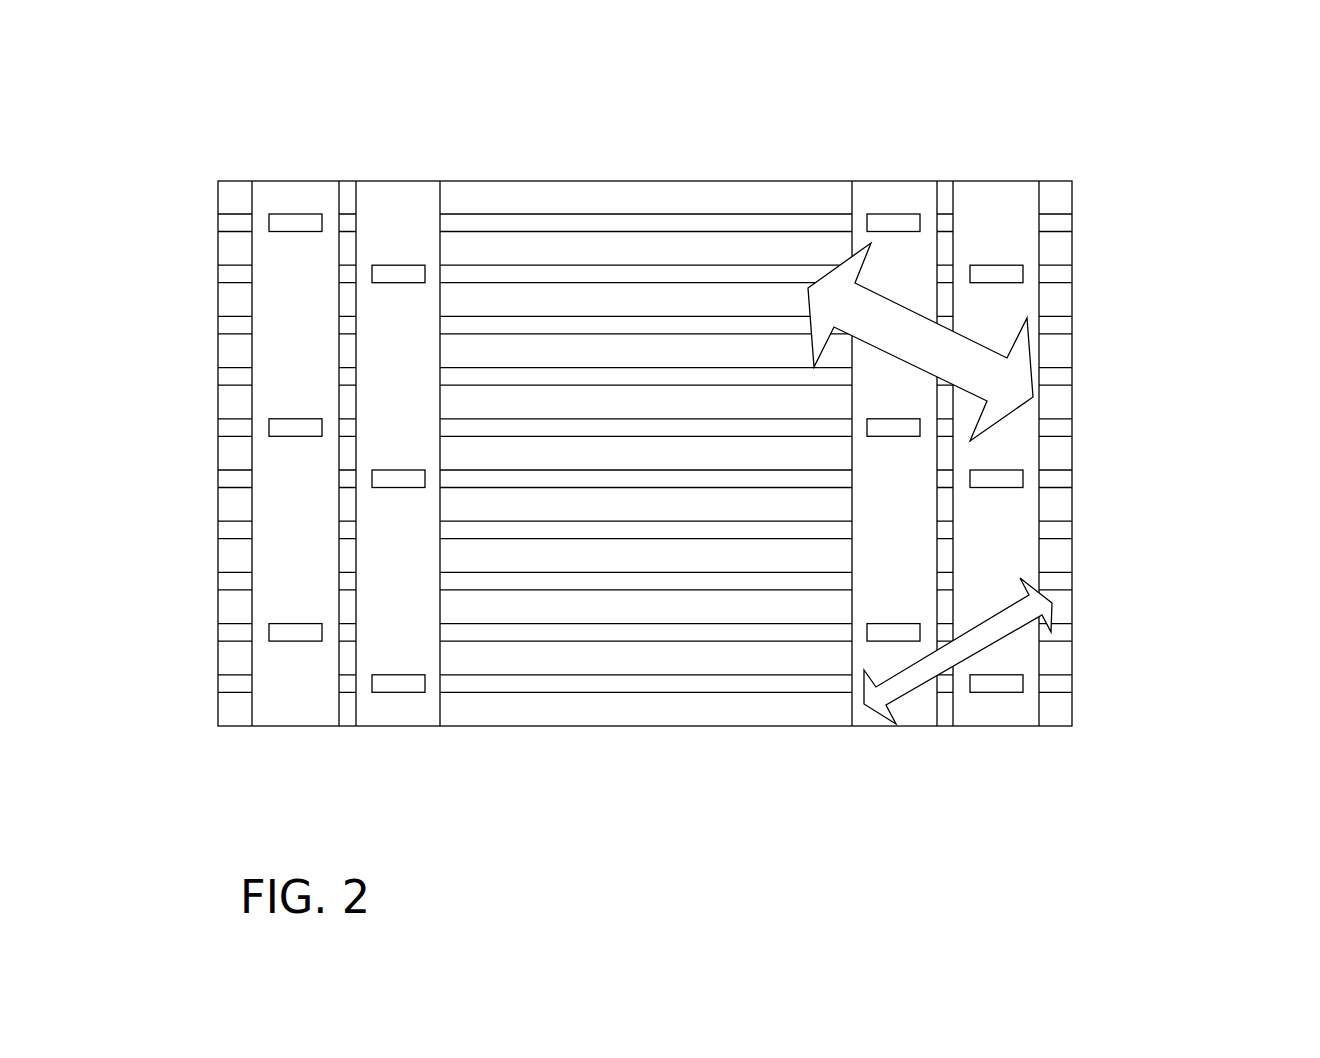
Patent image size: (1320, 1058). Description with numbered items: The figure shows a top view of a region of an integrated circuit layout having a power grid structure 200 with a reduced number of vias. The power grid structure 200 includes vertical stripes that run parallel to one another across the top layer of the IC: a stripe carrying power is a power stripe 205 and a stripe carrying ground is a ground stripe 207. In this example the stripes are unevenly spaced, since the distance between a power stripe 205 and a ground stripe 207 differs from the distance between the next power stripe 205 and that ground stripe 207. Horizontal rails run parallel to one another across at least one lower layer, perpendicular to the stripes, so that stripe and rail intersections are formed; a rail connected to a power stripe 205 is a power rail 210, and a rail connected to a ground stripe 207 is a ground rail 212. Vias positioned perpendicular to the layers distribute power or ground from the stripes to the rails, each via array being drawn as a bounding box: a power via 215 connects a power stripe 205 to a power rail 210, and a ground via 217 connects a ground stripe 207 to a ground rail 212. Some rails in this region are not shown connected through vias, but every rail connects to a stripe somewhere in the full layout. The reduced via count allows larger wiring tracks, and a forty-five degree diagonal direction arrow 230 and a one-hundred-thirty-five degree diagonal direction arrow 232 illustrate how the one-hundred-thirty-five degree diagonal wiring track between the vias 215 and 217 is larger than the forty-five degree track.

The power grid structure 200 is at (1162, 87).
The power stripe 205 is at (268, 180).
The ground stripe 207 is at (398, 180).
The power rail 210 is at (218, 220).
The ground rail 212 is at (218, 275).
The power via 215 is at (273, 213).
The ground via 217 is at (410, 265).
The 45° diagonal direction arrow 230 is at (1050, 605).
The 135° diagonal direction arrow 232 is at (1032, 350).